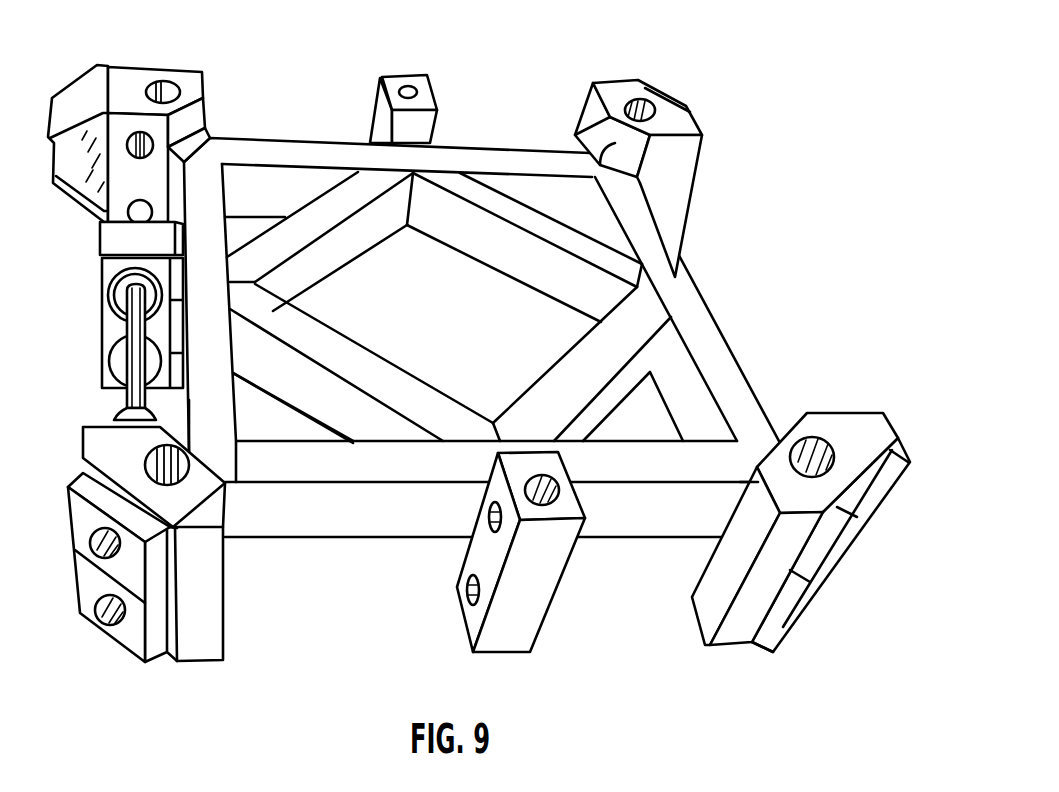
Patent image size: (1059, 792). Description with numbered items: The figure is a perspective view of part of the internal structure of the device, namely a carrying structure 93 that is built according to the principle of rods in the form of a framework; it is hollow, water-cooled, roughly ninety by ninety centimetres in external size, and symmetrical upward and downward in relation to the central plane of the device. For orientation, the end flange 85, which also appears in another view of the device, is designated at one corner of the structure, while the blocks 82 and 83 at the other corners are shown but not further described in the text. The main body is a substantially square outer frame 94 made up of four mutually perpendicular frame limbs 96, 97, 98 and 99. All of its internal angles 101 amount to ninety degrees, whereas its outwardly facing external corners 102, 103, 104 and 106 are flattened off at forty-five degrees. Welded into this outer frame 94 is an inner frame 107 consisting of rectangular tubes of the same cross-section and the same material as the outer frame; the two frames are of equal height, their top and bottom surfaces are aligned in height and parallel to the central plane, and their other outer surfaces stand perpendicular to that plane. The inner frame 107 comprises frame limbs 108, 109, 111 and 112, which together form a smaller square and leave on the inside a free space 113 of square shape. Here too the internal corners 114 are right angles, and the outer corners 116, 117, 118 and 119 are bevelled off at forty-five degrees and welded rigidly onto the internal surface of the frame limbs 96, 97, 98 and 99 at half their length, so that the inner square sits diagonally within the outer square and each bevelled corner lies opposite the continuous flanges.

The corner block 82 is at (683, 125).
The corner block 83 is at (840, 424).
The end flange 85 is at (118, 78).
The carrying structure 93 is at (716, 198).
The outer frame 94 is at (420, 531).
The frame limb 96 is at (337, 146).
The frame limb 97 is at (710, 331).
The frame limb 98 is at (647, 525).
The frame limb 99 is at (205, 402).
The internal angle 101 is at (243, 438).
The external corner 102 is at (205, 134).
The external corner 103 is at (592, 132).
The external corner 104 is at (770, 443).
The external corner 106 is at (240, 482).
The inner frame 107 is at (348, 354).
The frame limb 108 is at (336, 252).
The frame limb 109 is at (518, 265).
The frame limb 111 is at (608, 398).
The frame limb 112 is at (372, 417).
The free space 113 is at (532, 357).
The internal corner 114 is at (258, 283).
The outer corner 116 is at (440, 170).
The outer corner 117 is at (637, 287).
The outer corner 118 is at (477, 441).
The outer corner 119 is at (205, 300).